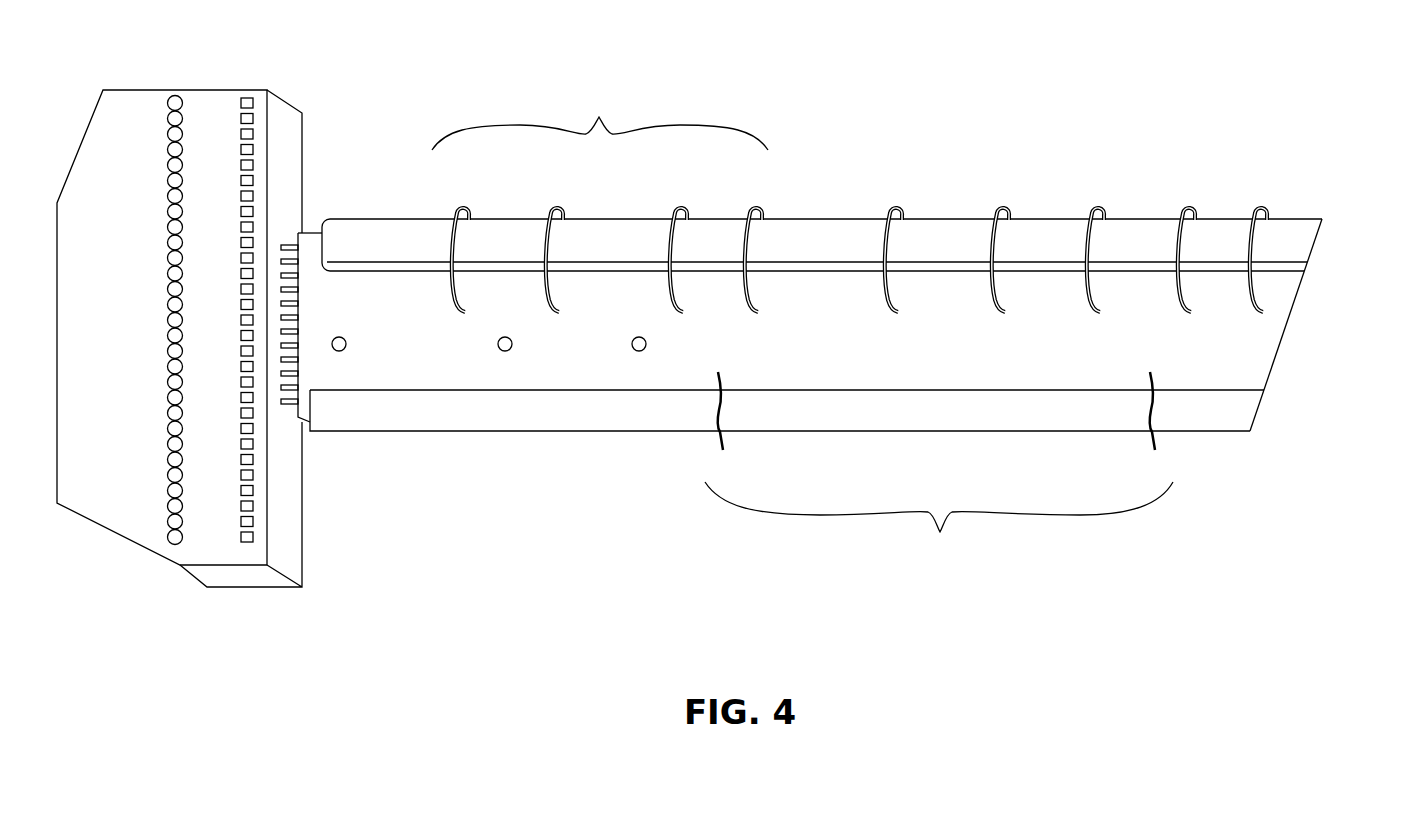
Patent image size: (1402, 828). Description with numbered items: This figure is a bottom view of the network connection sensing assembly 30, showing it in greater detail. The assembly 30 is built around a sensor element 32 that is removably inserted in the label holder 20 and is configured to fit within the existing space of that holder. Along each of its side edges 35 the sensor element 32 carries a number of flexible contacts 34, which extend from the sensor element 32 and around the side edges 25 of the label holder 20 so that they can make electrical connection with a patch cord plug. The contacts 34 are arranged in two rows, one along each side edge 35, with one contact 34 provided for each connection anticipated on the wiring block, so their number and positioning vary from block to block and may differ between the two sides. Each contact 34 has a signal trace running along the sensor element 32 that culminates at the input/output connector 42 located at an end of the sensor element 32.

The label holder 20 is at (955, 190).
The side edges 25 is at (1067, 219).
The network connection sensing assembly 30 is at (1310, 321).
The sensor element 32 is at (323, 368).
The flexible contacts 34 is at (462, 208).
The side edges 35 is at (405, 296).
The input/output (IO) connector 42 is at (226, 90).